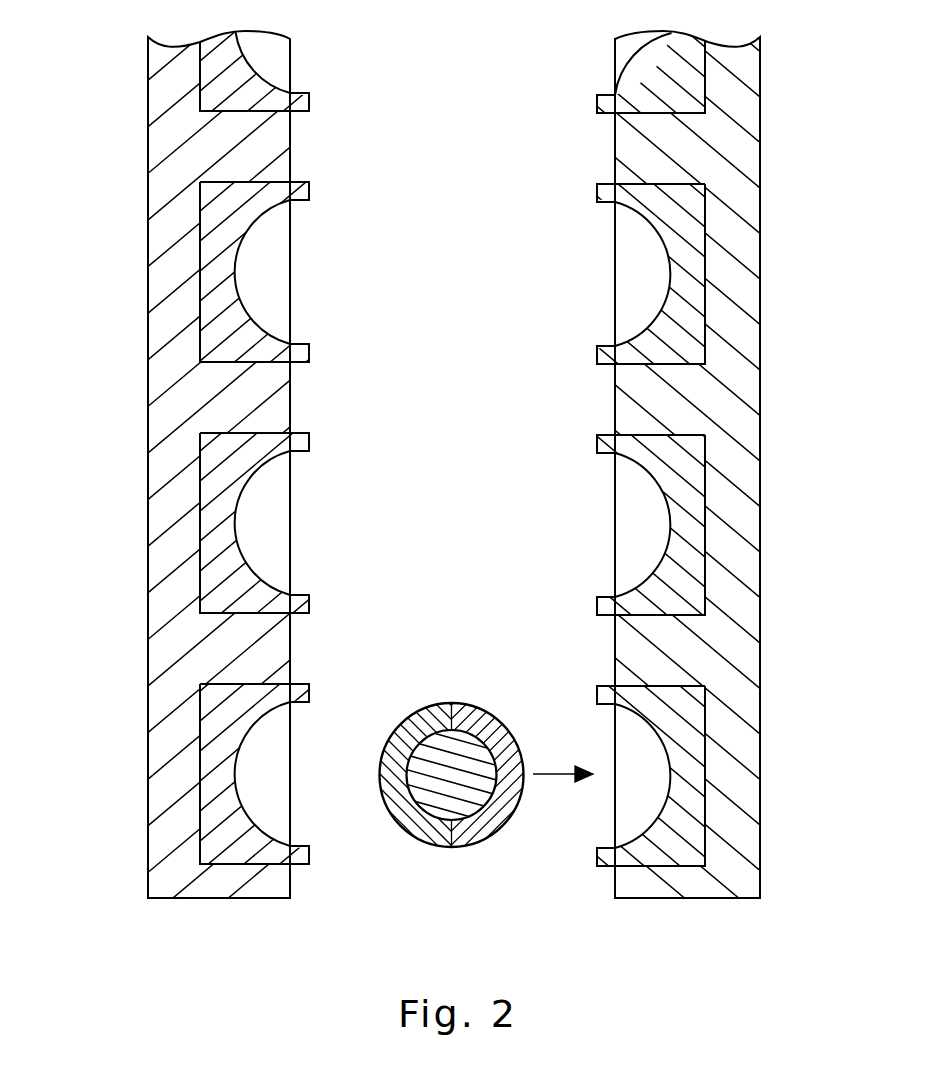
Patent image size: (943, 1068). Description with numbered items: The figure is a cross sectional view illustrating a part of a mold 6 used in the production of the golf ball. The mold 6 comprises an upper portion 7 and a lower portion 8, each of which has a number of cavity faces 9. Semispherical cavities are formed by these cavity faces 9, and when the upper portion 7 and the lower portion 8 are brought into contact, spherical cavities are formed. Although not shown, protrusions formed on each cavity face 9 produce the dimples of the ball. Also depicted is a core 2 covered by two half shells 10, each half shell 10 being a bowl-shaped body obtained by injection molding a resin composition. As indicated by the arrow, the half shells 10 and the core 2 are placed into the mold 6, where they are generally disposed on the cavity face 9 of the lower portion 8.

The mold 6 is at (55, 40).
The upper portion 7 is at (163, 459).
The lower portion 8 is at (738, 458).
The cavity face 9 is at (250, 317).
The half shell 10 is at (415, 828).
The core 2 is at (453, 802).